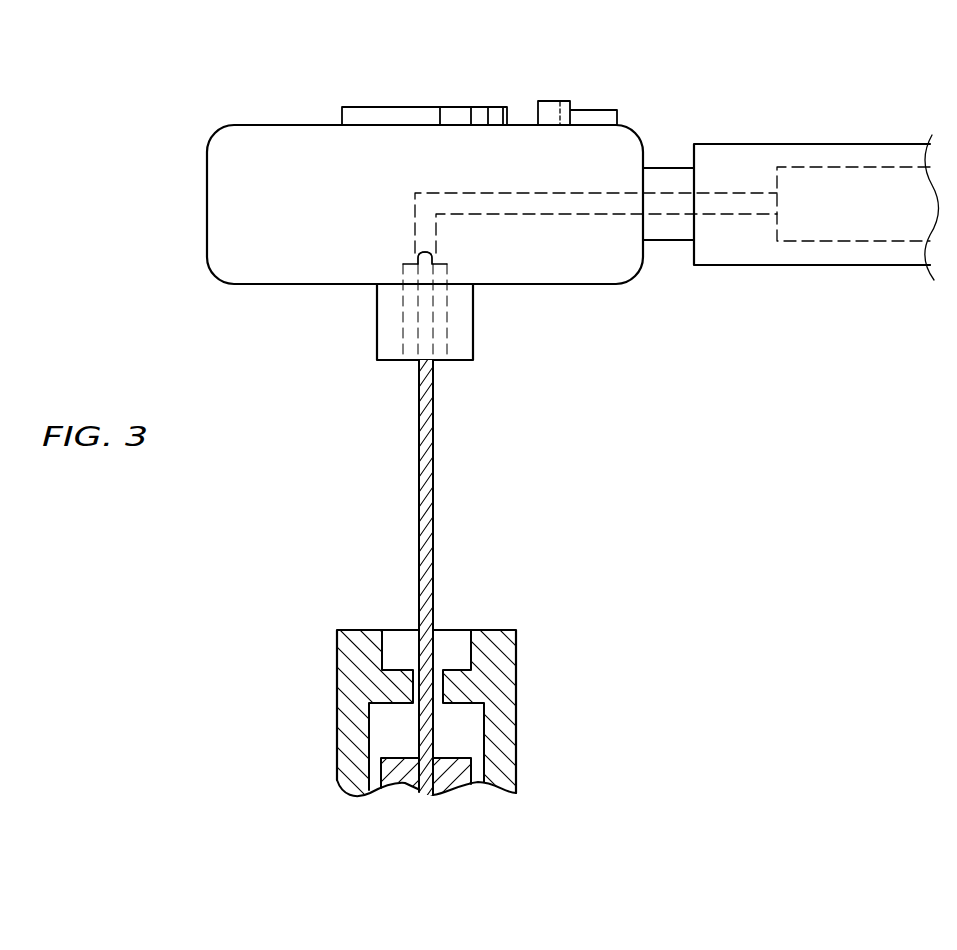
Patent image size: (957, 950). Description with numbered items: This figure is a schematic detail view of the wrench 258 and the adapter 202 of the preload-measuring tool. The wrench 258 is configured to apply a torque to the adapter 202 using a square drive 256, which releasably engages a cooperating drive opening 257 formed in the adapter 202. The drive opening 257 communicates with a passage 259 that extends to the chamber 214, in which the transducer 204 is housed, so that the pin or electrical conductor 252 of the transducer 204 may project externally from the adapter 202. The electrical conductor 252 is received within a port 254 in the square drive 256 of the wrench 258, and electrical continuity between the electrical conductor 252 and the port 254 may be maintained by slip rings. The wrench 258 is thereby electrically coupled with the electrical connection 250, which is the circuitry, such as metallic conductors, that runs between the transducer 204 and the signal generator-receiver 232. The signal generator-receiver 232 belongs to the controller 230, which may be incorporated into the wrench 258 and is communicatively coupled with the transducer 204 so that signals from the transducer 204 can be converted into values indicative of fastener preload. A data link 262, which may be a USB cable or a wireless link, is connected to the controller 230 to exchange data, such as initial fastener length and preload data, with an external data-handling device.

The electrical connection 250 is at (366, 190).
The wrench 258 is at (760, 100).
The controller 230 is at (818, 144).
The signal generator-receiver 232 is at (885, 218).
The data link 262 is at (787, 265).
The square drive 256 is at (377, 322).
The port 254 is at (447, 330).
The electrical conductor 252 is at (433, 512).
The drive opening 257 is at (471, 648).
The adapter 202 is at (540, 648).
The passage 259 is at (414, 698).
The transducer 204 is at (387, 770).
The chamber 214 is at (484, 728).